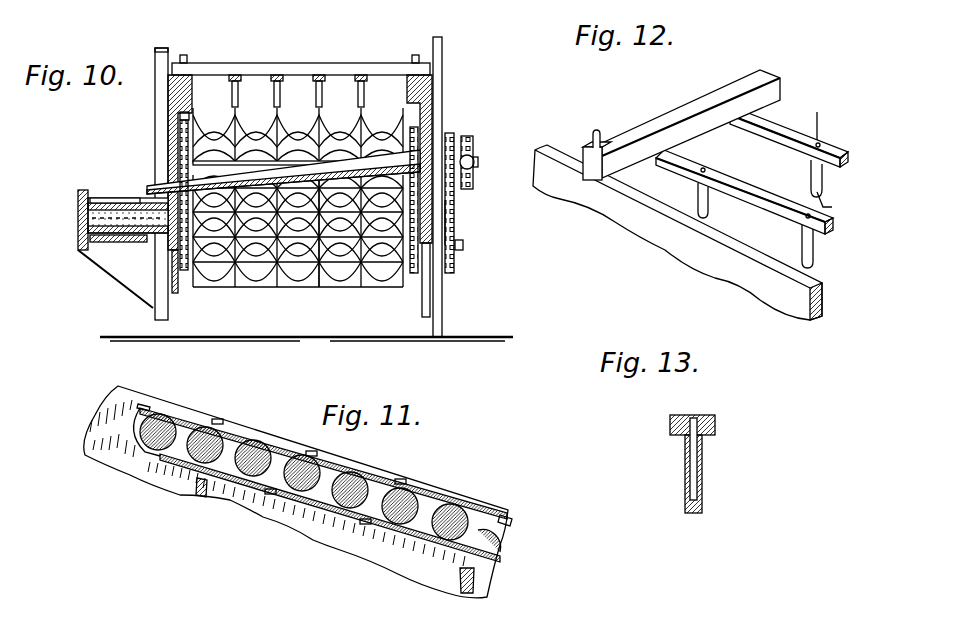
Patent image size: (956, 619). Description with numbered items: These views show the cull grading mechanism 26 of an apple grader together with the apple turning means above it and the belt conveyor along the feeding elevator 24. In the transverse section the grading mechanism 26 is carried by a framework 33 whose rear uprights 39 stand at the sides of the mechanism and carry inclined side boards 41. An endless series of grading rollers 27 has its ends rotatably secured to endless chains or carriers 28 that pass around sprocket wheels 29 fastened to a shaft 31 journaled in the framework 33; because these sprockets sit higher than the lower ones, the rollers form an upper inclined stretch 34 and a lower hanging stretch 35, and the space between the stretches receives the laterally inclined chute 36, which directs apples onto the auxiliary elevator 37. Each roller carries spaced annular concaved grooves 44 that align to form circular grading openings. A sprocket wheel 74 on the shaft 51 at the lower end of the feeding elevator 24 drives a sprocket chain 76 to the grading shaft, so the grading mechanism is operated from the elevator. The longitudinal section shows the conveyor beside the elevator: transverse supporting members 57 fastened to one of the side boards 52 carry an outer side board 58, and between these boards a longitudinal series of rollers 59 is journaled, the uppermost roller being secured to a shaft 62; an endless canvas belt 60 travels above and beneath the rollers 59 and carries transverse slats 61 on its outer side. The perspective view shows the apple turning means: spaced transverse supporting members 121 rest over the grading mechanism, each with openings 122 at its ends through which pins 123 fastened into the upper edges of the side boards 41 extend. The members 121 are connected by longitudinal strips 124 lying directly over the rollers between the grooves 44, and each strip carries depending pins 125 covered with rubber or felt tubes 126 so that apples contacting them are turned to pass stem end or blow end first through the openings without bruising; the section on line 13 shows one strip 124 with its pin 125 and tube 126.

In FIG. 12, the section line 13 is at (828, 155).
In FIG. 11, the inclined feeding elevator 24 is at (379, 590).
In FIG. 10, the grading mechanism 26 is at (366, 286).
In FIG. 10, the grading rollers 27 is at (370, 124).
In FIG. 10, the endless chains or carriers 28 is at (431, 210).
In FIG. 10, the sprocket wheels 29 is at (179, 143).
In FIG. 10, the shaft 31 is at (243, 161).
In FIG. 10, the framework 33 is at (442, 77).
In FIG. 10, the upper inclined stretch 34 is at (282, 112).
In FIG. 10, the lower hanging stretch 35 is at (280, 275).
In FIG. 10, the laterally inclined chute 36 is at (324, 168).
In FIG. 10, the auxiliary elevator 37 is at (100, 199).
In FIG. 11, the auxiliary elevator 37 is at (512, 520).
In FIG. 10, the rear uprights 39 is at (166, 97).
In FIG. 10, the inclined side boards 41 is at (178, 118).
In FIG. 12, the inclined side boards 41 is at (646, 226).
In FIG. 10, the annular concaved grooves 44 is at (252, 118).
In FIG. 10, the shaft 51 is at (463, 245).
In FIG. 11, the side boards 52 is at (285, 525).
In FIG. 10, the transverse supporting members 57 is at (131, 288).
In FIG. 11, the transverse supporting members 57 is at (205, 496).
In FIG. 10, the side board 58 is at (88, 220).
In FIG. 10, the rollers 59 is at (100, 222).
In FIG. 11, the rollers 59 is at (203, 428).
In FIG. 10, the endless belt 60 is at (80, 197).
In FIG. 11, the endless belt 60 is at (252, 444).
In FIG. 10, the transverse slats 61 is at (128, 204).
In FIG. 11, the transverse slats 61 is at (320, 456).
In FIG. 11, the shaft 62 is at (152, 445).
In FIG. 10, the sprocket wheel 74 is at (455, 133).
In FIG. 10, the sprocket chain 76 is at (453, 228).
In FIG. 10, the transverse supporting members 121 is at (383, 67).
In FIG. 12, the transverse supporting members 121 is at (680, 113).
In FIG. 12, the openings 122 is at (600, 140).
In FIG. 10, the pins 123 is at (186, 55).
In FIG. 12, the pins 123 is at (594, 140).
In FIG. 10, the longitudinal strips 124 is at (238, 74).
In FIG. 12, the longitudinal strips 124 is at (778, 122).
In FIG. 13, the longitudinal strips 124 is at (716, 427).
In FIG. 12, the depending pins 125 is at (707, 169).
In FIG. 13, the depending pins 125 is at (690, 470).
In FIG. 10, the tubes 126 is at (232, 95).
In FIG. 12, the tubes 126 is at (824, 176).
In FIG. 13, the tubes 126 is at (703, 472).